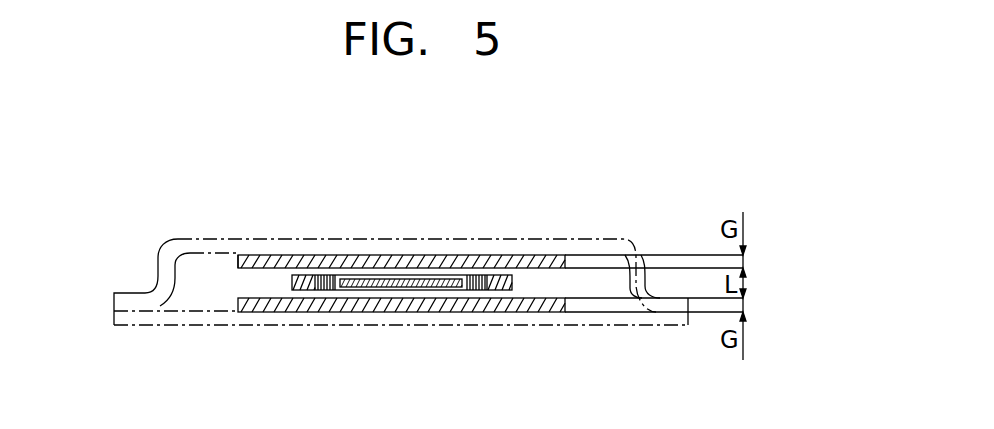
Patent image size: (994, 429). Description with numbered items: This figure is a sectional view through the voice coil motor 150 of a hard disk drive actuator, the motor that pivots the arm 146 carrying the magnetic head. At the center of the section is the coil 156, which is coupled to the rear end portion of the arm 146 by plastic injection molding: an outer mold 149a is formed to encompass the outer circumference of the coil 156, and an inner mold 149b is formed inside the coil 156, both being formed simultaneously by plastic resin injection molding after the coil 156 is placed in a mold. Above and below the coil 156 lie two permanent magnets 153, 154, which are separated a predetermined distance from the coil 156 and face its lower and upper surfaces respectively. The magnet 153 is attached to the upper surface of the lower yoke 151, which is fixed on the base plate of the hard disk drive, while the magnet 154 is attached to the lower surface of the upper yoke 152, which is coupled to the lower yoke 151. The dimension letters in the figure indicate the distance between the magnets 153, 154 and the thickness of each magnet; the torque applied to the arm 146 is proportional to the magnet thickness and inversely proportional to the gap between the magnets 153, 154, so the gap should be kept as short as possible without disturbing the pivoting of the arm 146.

The voice coil motor 150 is at (180, 219).
The lower yoke 151 is at (607, 322).
The upper yoke 152 is at (398, 246).
The magnet 153 is at (246, 312).
The magnet 154 is at (280, 253).
The arm 146 is at (521, 280).
The outer mold 149a is at (497, 290).
The inner mold 149b is at (427, 290).
The coil 156 is at (327, 290).